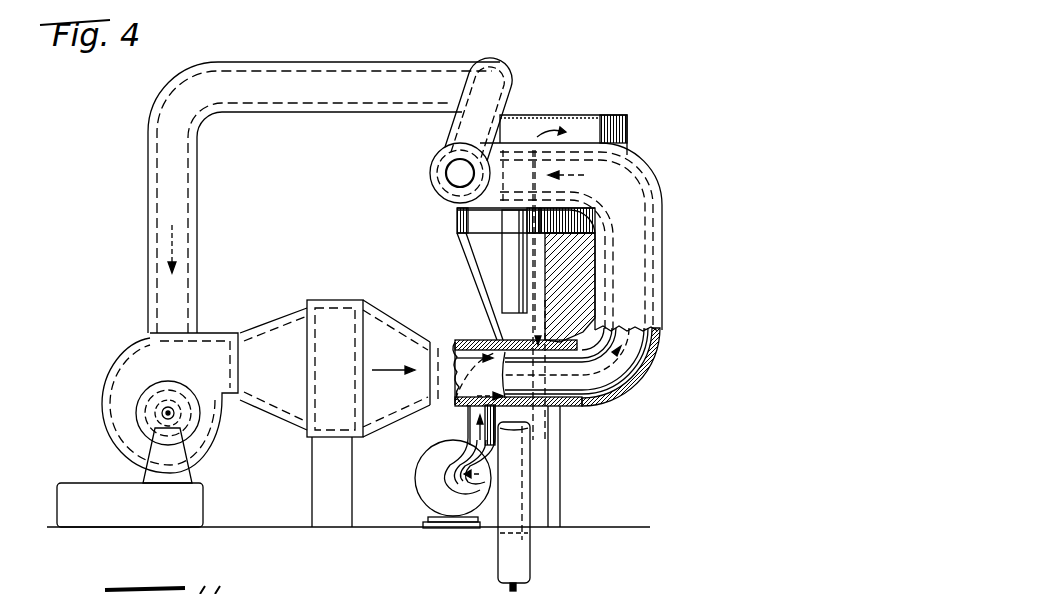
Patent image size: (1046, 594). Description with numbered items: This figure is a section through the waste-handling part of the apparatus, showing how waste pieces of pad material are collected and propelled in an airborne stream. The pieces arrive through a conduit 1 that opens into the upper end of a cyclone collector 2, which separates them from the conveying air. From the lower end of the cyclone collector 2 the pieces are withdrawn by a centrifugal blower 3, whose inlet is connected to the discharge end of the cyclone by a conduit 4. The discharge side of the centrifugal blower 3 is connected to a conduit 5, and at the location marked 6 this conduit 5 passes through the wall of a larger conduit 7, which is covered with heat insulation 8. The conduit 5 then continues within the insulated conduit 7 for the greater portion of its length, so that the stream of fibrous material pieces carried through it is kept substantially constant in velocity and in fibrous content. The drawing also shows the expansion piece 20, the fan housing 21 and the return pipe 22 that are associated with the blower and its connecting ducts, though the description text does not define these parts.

The conduit 1 is at (513, 142).
The cyclone collector 2 is at (478, 274).
The centrifugal blower 3 is at (418, 470).
The conduit 4 is at (455, 494).
The conduit 5 is at (431, 172).
The wall passage 6 is at (489, 342).
The conduit 7 is at (592, 403).
The heat insulation 8 is at (622, 383).
The expansion chamber 20 is at (352, 300).
The fan housing 21 is at (214, 333).
The return conduit 22 is at (509, 84).